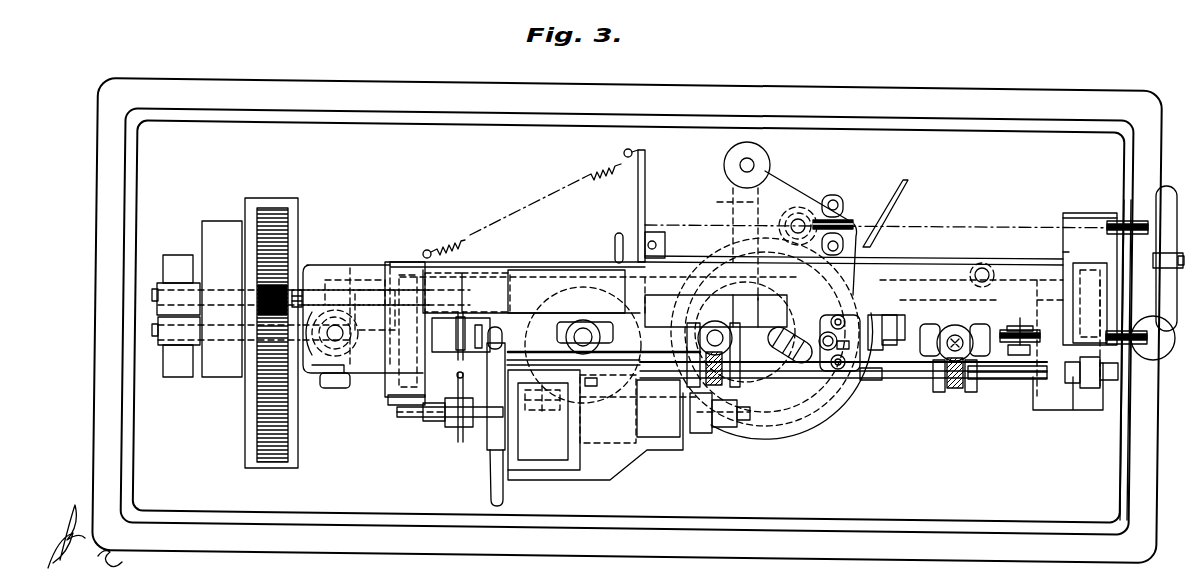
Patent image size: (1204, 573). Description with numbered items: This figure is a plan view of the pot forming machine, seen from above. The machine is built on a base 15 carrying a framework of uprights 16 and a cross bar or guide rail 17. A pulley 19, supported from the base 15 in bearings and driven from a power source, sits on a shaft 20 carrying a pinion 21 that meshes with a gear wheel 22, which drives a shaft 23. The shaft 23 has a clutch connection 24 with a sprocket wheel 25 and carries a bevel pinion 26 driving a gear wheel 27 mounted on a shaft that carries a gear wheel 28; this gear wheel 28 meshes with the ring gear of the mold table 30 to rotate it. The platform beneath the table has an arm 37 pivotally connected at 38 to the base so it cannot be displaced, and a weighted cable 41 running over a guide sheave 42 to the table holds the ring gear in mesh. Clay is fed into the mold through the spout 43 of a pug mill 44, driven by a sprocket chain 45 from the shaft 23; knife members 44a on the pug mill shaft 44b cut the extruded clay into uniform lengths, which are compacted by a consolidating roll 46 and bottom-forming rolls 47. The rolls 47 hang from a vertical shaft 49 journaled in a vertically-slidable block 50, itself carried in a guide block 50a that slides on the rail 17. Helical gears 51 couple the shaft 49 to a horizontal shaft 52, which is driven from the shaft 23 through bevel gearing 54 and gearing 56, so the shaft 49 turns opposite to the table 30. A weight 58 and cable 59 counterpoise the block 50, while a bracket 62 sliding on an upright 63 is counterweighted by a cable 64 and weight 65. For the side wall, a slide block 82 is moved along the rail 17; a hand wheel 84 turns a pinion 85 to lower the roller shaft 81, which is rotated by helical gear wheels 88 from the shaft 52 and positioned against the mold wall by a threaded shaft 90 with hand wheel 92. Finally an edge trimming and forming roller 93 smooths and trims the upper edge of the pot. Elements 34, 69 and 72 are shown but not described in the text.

The base 15 is at (98, 340).
The uprights 16 is at (388, 397).
The cross bar or guide rail 17 is at (530, 287).
The pulley 19 is at (214, 229).
The shaft 20 is at (303, 290).
The pinion 21 is at (291, 284).
The gear wheel 22 is at (290, 222).
The shaft 23 is at (209, 339).
The clutch connection 24 is at (482, 325).
The sprocket wheel 25 is at (455, 323).
The bevel pinion 26 is at (596, 385).
The gear wheel 27 is at (599, 318).
The gear wheel 28 is at (561, 287).
The mold table 30 is at (817, 410).
The roller 34 is at (810, 387).
The arm 37 is at (739, 199).
The pivotal connection 38 is at (731, 160).
The cable 41 is at (604, 427).
The guide sheave 42 is at (533, 417).
The spout 43 is at (706, 433).
The pug mill 44 is at (540, 450).
The knife members 44a is at (728, 420).
The pug mill shaft 44b is at (428, 418).
The sprocket chain 45 is at (457, 383).
The consolidating roll 46 is at (827, 373).
The bottom-forming rolls 47 is at (947, 327).
The vertical shaft 49 is at (956, 341).
The vertically-slidable block 50 is at (990, 380).
The guide block 50a is at (893, 378).
The helical gears 51 is at (953, 388).
The horizontal shaft 52 is at (364, 368).
The bevel gearing 54 is at (310, 386).
The gearing 56 is at (344, 392).
The weight 58 is at (1171, 345).
The cable 59 is at (1052, 340).
The bracket 62 is at (861, 378).
The upright 63 is at (804, 207).
The cable 64 is at (972, 230).
The weight 65 is at (1117, 207).
The lever 69 is at (870, 248).
The bracket 72 is at (853, 306).
The shaft 81 is at (728, 323).
The slide block 82 is at (716, 311).
The hand wheel 84 is at (614, 247).
The pinion 85 is at (708, 245).
The helical gear wheels 88 is at (740, 382).
The shaft 90 is at (1029, 257).
The hand wheel 92 is at (1171, 193).
The edge trimming and forming roller 93 is at (658, 408).